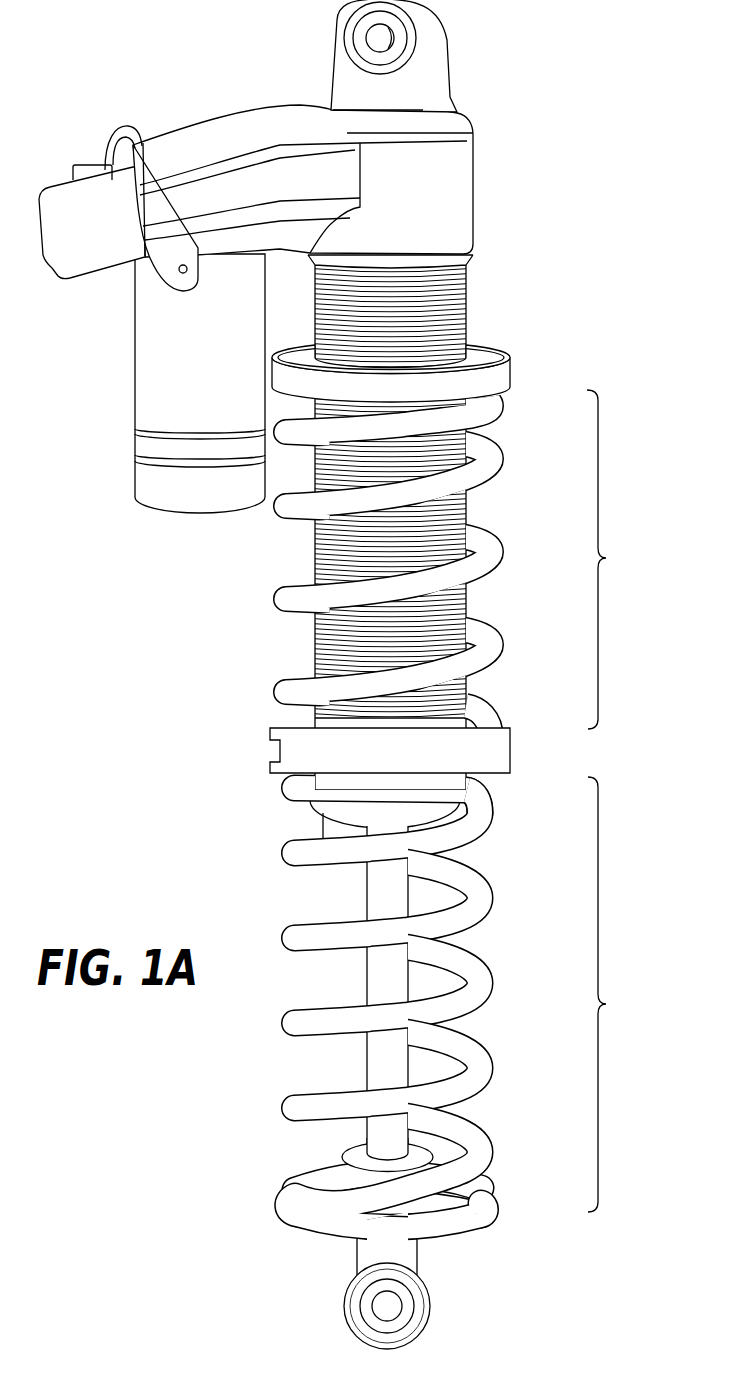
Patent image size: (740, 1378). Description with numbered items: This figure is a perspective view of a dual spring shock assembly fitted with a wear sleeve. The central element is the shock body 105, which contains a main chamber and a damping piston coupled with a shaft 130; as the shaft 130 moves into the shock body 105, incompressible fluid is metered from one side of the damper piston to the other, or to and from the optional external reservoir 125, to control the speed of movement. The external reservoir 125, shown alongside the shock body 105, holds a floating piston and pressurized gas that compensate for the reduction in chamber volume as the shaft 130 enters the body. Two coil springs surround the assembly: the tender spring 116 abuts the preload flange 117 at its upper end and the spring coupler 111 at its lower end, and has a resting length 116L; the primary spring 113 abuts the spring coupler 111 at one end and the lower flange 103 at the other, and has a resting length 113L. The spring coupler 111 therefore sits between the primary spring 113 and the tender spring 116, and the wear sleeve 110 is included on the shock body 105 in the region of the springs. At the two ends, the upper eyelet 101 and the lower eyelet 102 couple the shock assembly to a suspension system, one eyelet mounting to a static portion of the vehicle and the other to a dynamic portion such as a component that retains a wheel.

The upper eyelet 101 is at (396, 41).
The lower eyelet 102 is at (395, 1310).
The lower flange 103 is at (486, 1203).
The shock body 105 is at (479, 506).
The wear sleeve 110 is at (444, 712).
The spring coupler 111 is at (506, 748).
The primary spring 113 is at (484, 978).
The resting length of primary spring 113L is at (624, 994).
The tender spring 116 is at (485, 638).
The resting length of tender spring 116L is at (623, 559).
The preload flange 117 is at (511, 375).
The external reservoir 125 is at (140, 447).
The shaft 130 is at (461, 1045).